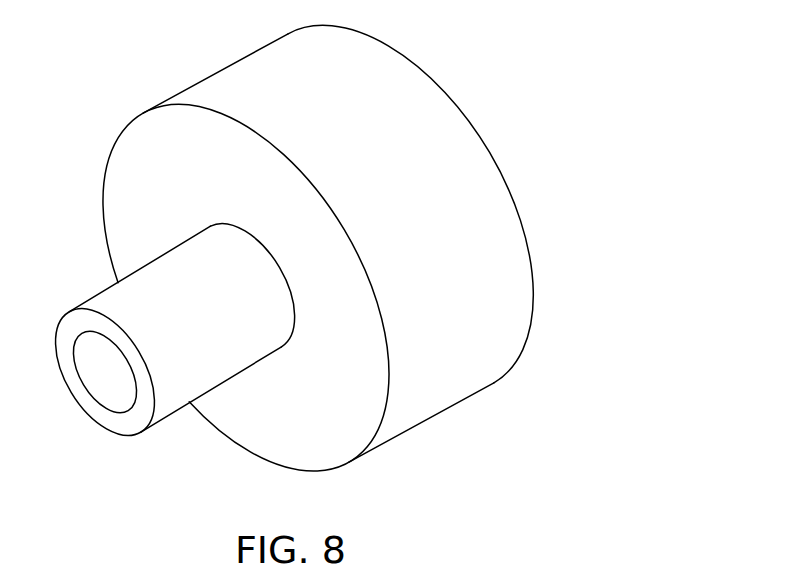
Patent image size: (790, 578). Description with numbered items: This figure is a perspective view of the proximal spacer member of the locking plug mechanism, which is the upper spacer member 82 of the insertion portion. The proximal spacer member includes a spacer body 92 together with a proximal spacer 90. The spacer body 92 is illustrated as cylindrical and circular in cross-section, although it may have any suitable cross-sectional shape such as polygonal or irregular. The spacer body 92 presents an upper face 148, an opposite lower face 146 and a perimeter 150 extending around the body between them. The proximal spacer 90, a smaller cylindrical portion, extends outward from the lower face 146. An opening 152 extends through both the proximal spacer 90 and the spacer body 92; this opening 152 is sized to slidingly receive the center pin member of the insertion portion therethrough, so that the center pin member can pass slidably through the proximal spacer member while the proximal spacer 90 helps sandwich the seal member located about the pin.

The upper spacer member 82 is at (333, 268).
The spacer body 92 is at (215, 65).
The perimeter 150 is at (458, 323).
The upper face 148 is at (460, 203).
The lower face 146 is at (246, 302).
The proximal spacer 90 is at (164, 371).
The opening 152 is at (91, 390).